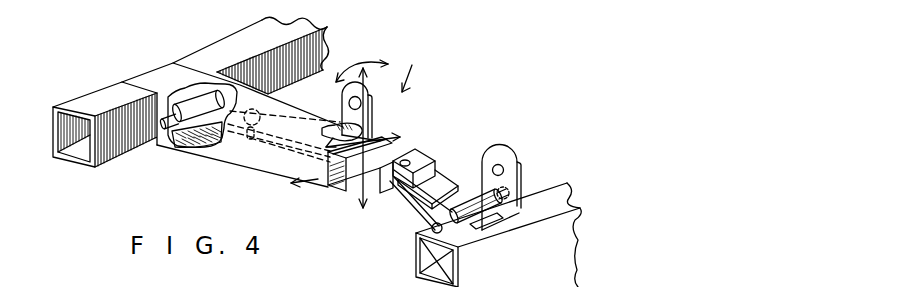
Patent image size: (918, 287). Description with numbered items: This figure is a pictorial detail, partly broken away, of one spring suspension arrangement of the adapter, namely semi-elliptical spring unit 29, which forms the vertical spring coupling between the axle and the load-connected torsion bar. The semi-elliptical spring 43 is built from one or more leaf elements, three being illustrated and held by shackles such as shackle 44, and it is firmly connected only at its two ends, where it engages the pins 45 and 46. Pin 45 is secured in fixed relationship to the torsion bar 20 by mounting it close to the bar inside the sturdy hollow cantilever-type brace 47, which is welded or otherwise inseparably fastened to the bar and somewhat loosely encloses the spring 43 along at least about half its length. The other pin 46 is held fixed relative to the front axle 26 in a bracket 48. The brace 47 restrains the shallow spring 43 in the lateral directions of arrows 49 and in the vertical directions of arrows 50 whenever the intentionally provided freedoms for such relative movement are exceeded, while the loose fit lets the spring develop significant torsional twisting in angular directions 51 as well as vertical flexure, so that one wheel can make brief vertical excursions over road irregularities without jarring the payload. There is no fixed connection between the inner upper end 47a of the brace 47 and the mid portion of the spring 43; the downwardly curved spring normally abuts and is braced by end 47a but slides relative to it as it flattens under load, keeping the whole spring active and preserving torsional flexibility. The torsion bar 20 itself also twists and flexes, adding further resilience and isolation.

The torsion bar 20 is at (210, 53).
The front axle 26 is at (557, 190).
The semi-elliptical spring unit 29 is at (416, 69).
The semi-elliptical spring 43 is at (440, 185).
The shackle 44 is at (407, 157).
The pin 45 is at (166, 130).
The pin 46 is at (430, 225).
The hollow cantilever-type brace 47 is at (297, 115).
The inner upper end of brace 47a is at (325, 148).
The bracket 48 is at (520, 158).
The arrows of lateral directions 49 is at (345, 178).
The arrows of vertical directions 50 is at (358, 181).
The angular directions 51 is at (355, 121).